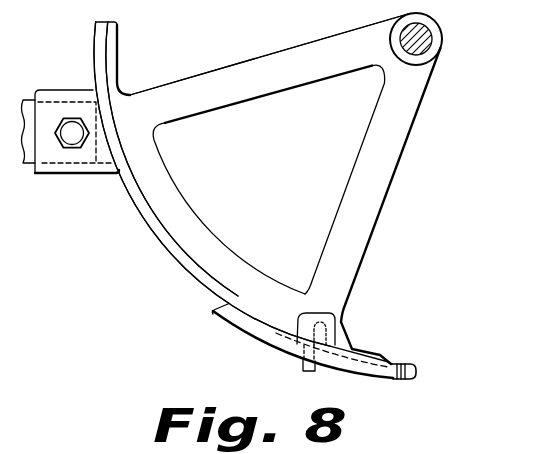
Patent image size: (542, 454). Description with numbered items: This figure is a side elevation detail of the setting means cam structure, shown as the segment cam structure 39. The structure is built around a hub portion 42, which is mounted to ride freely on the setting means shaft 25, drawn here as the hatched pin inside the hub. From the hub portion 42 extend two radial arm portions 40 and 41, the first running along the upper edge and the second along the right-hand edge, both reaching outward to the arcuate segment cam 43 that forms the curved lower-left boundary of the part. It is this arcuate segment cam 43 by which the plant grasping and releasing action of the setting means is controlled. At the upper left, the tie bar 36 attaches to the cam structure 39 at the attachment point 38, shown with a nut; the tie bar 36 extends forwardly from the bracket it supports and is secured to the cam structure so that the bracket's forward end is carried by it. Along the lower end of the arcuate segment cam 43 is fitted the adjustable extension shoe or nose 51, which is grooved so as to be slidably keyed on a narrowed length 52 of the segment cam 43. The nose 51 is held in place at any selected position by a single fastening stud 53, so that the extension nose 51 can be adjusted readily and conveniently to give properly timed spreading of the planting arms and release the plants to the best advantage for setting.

The setting means shaft 25 is at (422, 35).
The tie bar 36 is at (35, 168).
The attachment point 38 is at (72, 117).
The segment cam structure 39 is at (190, 70).
The radial arm portion 40 is at (262, 60).
The radial arm portion 41 is at (389, 188).
The hub portion 42 is at (433, 56).
The arcuate segment cam 43 is at (140, 212).
The extension shoe or nose 51 is at (373, 379).
The narrowed length of the segment cam 52 is at (255, 316).
The fastening stud 53 is at (303, 366).